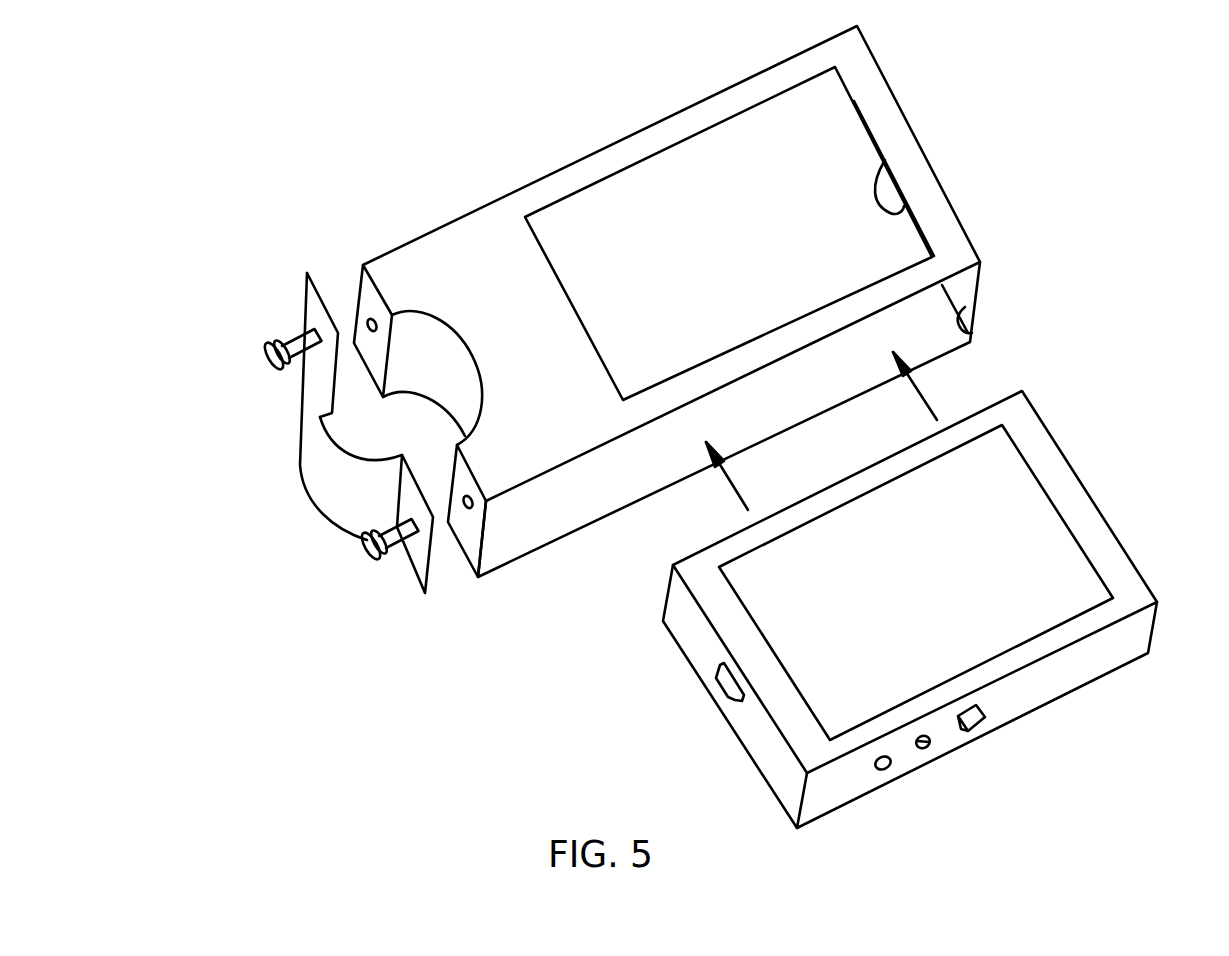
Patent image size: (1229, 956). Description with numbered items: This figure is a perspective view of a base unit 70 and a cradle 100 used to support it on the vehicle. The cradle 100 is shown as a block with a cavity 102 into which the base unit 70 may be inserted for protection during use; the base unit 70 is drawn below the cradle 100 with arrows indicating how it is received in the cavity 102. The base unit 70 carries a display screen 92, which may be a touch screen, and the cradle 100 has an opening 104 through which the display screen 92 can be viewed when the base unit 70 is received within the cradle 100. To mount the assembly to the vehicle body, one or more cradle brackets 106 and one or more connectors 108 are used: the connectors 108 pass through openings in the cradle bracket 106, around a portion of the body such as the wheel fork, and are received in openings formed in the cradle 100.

The base unit 70 is at (1023, 458).
The display screen 92 is at (932, 585).
The cradle 100 is at (470, 232).
The cavity 102 is at (975, 333).
The opening 104 is at (885, 160).
The cradle bracket 106 is at (322, 518).
The connector 108 is at (279, 367).